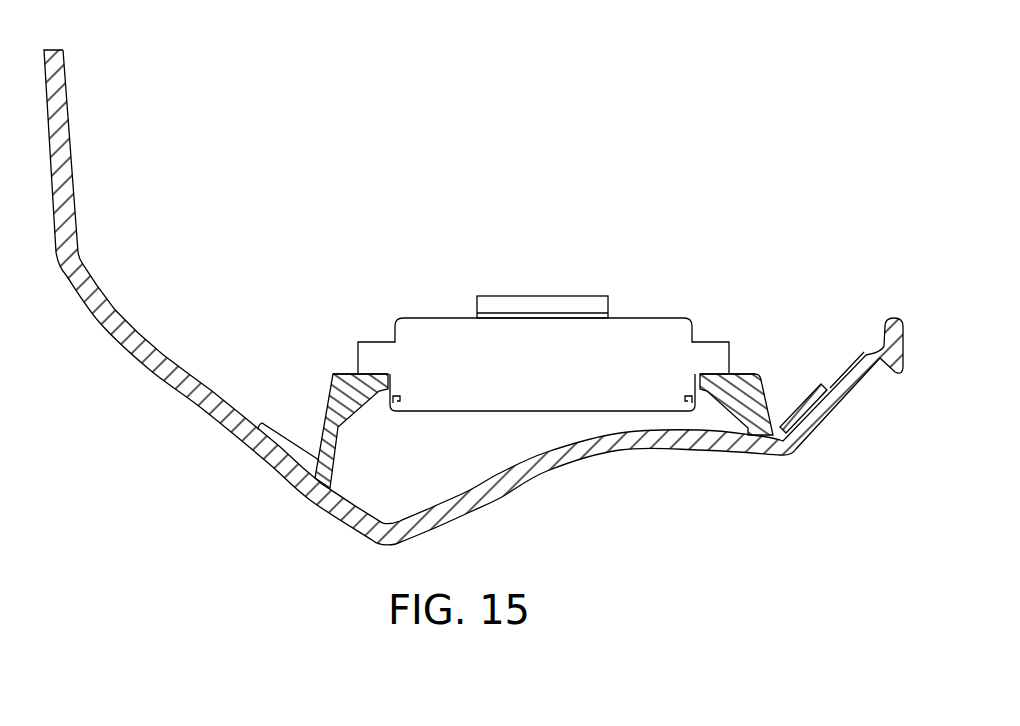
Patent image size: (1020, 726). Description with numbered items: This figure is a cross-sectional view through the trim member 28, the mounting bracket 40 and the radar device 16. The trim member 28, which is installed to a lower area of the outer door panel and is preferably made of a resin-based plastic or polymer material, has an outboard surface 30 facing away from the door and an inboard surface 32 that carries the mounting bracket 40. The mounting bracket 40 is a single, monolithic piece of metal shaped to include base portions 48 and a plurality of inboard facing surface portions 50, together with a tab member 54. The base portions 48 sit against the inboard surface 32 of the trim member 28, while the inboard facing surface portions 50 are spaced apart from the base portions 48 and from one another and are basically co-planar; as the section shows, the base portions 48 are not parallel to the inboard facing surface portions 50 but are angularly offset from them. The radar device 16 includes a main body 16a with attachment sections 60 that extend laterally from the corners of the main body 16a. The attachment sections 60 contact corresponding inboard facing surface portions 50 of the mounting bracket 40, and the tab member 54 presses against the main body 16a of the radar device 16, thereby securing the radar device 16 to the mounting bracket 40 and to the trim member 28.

The radar device 16 is at (638, 348).
The main body 16a is at (437, 358).
The trim member 28 is at (557, 467).
The outboard surface 30 is at (266, 460).
The inboard surface 32 is at (176, 352).
The mounting bracket 40 is at (328, 406).
The base portions 48 is at (287, 432).
The inboard facing surface portions 50 is at (341, 372).
The tab member 54 is at (521, 293).
The attachment sections 60 is at (377, 357).